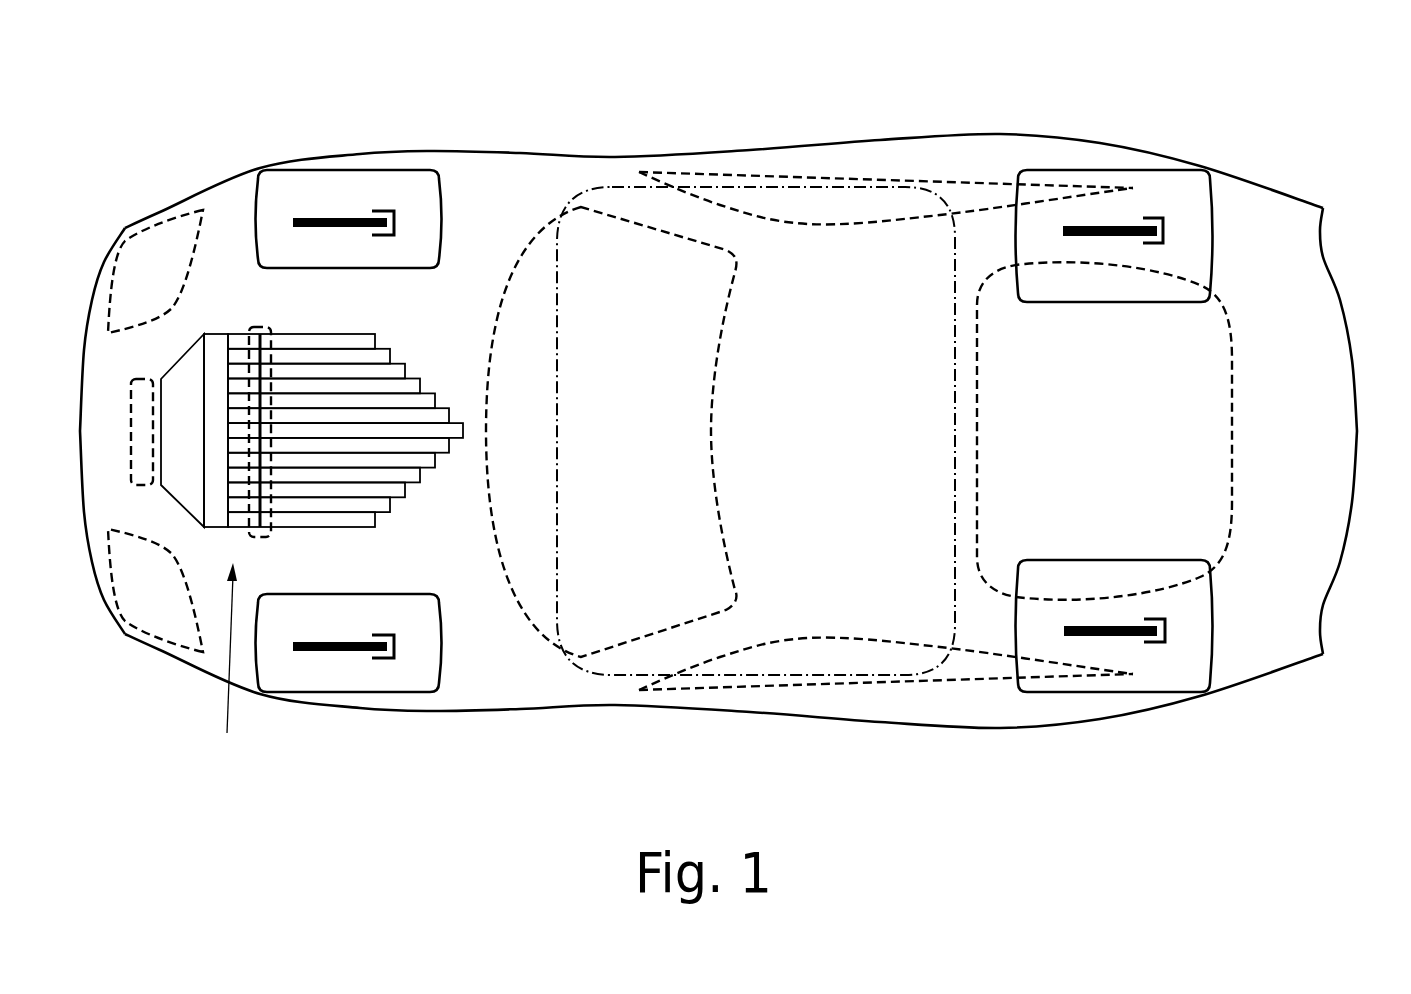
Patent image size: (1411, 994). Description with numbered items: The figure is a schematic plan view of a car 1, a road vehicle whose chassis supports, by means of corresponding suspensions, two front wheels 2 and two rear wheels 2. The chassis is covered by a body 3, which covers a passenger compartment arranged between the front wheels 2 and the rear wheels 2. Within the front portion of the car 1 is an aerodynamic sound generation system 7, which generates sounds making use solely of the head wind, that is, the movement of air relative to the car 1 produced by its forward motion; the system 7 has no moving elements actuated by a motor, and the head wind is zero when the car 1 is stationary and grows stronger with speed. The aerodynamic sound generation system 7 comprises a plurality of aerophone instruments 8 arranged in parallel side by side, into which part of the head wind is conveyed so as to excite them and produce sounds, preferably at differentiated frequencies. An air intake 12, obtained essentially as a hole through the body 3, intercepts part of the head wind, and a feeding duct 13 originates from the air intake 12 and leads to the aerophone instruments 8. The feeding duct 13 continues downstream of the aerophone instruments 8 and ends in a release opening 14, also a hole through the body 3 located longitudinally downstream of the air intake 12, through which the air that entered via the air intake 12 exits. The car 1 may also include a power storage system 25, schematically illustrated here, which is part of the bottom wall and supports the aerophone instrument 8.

The car 1 is at (721, 477).
The wheels 2 is at (411, 203).
The body 3 is at (277, 75).
The aerodynamic sound generation system 7 is at (227, 663).
The aerophone instruments 8 is at (433, 415).
The air intake 12 is at (137, 436).
The feeding duct 13 is at (190, 475).
The release opening 14 is at (263, 323).
The power storage system 25 is at (617, 187).